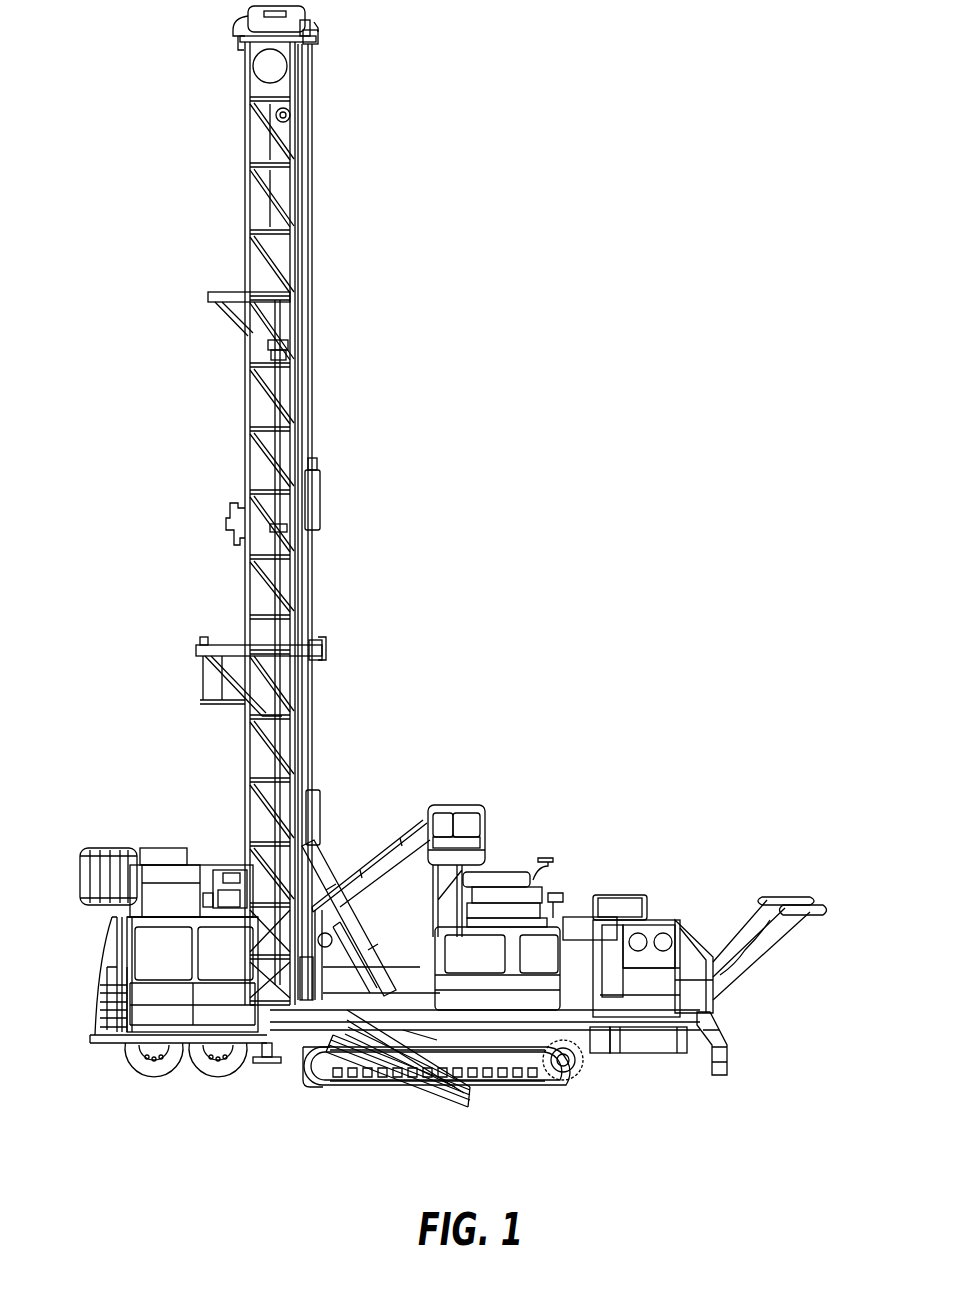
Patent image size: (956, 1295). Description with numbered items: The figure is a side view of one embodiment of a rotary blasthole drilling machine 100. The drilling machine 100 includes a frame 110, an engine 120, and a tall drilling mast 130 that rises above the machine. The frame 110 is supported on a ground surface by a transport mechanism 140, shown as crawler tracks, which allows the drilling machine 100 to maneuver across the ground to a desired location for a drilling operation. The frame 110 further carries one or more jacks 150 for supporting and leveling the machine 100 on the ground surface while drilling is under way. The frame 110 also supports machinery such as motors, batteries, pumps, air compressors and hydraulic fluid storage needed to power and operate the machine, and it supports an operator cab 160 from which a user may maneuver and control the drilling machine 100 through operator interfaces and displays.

The drilling machine 100 is at (414, 141).
The frame 110 is at (92, 1041).
The engine 120 is at (568, 917).
The drilling mast 130 is at (297, 392).
The transport mechanism 140 is at (582, 1068).
The jacks 150 is at (270, 1068).
The operator cab 160 is at (180, 905).